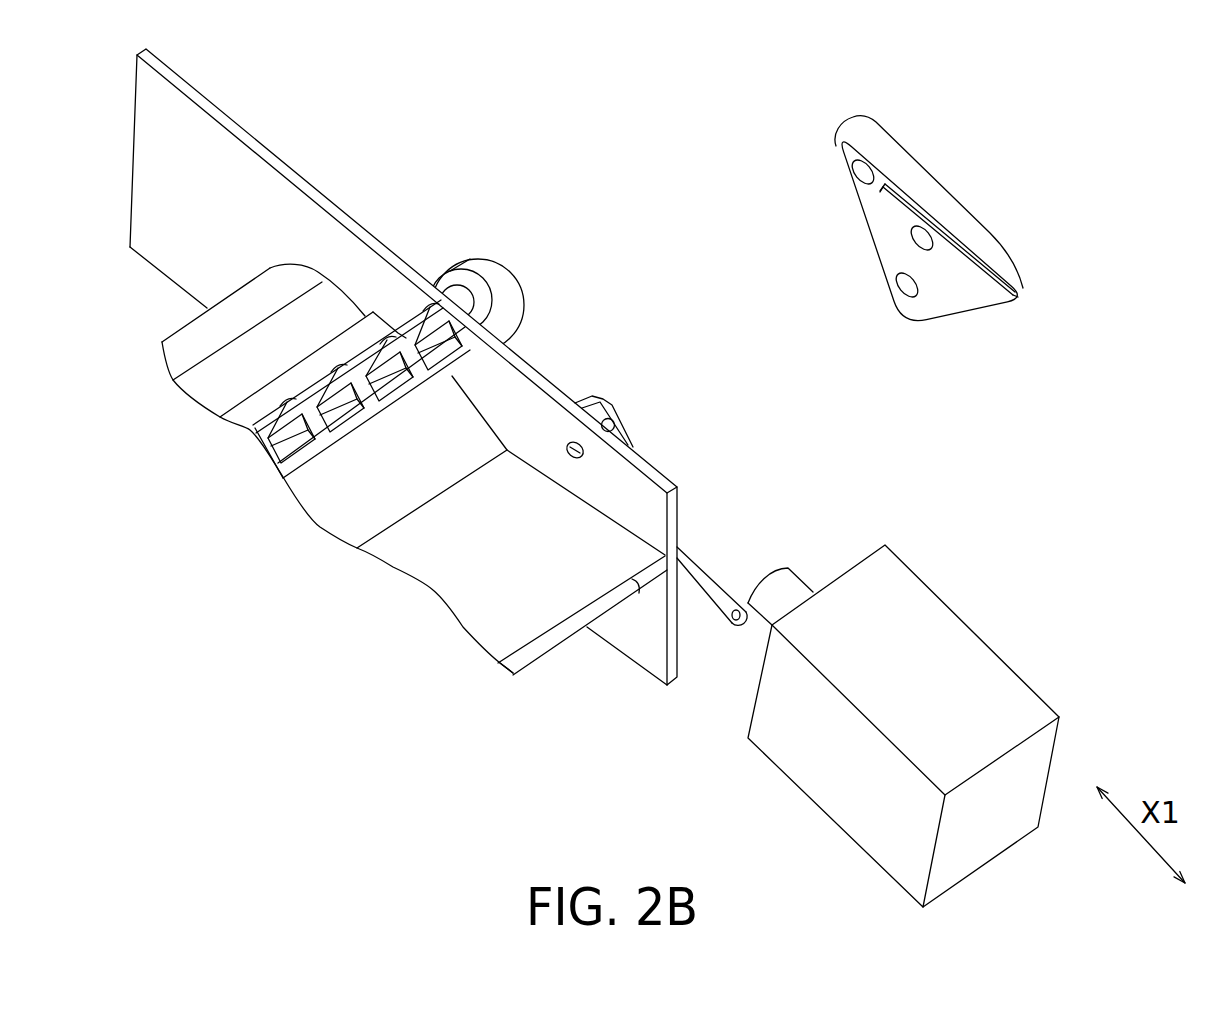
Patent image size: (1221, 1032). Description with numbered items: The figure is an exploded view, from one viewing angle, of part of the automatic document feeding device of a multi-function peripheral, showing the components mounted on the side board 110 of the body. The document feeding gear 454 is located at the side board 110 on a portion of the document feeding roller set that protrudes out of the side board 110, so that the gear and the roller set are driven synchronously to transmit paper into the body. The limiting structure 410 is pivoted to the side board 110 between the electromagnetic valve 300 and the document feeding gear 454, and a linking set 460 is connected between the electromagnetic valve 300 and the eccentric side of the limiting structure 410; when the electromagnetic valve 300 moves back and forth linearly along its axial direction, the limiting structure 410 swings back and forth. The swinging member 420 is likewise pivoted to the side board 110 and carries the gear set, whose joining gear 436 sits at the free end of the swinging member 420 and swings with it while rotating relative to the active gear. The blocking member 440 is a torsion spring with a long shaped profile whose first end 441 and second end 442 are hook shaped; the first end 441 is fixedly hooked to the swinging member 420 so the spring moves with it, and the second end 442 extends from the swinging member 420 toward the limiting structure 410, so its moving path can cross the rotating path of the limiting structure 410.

The side board 110 is at (240, 165).
The electromagnetic valve 300 is at (940, 635).
The limiting structure 410 is at (620, 436).
The swinging member 420 is at (958, 235).
The joining gear 436 is at (895, 145).
The blocking member 440 is at (945, 228).
The first end 441 is at (1038, 279).
The second end 442 is at (872, 199).
The document feeding gear 454 is at (478, 272).
The linking set 460 is at (693, 578).